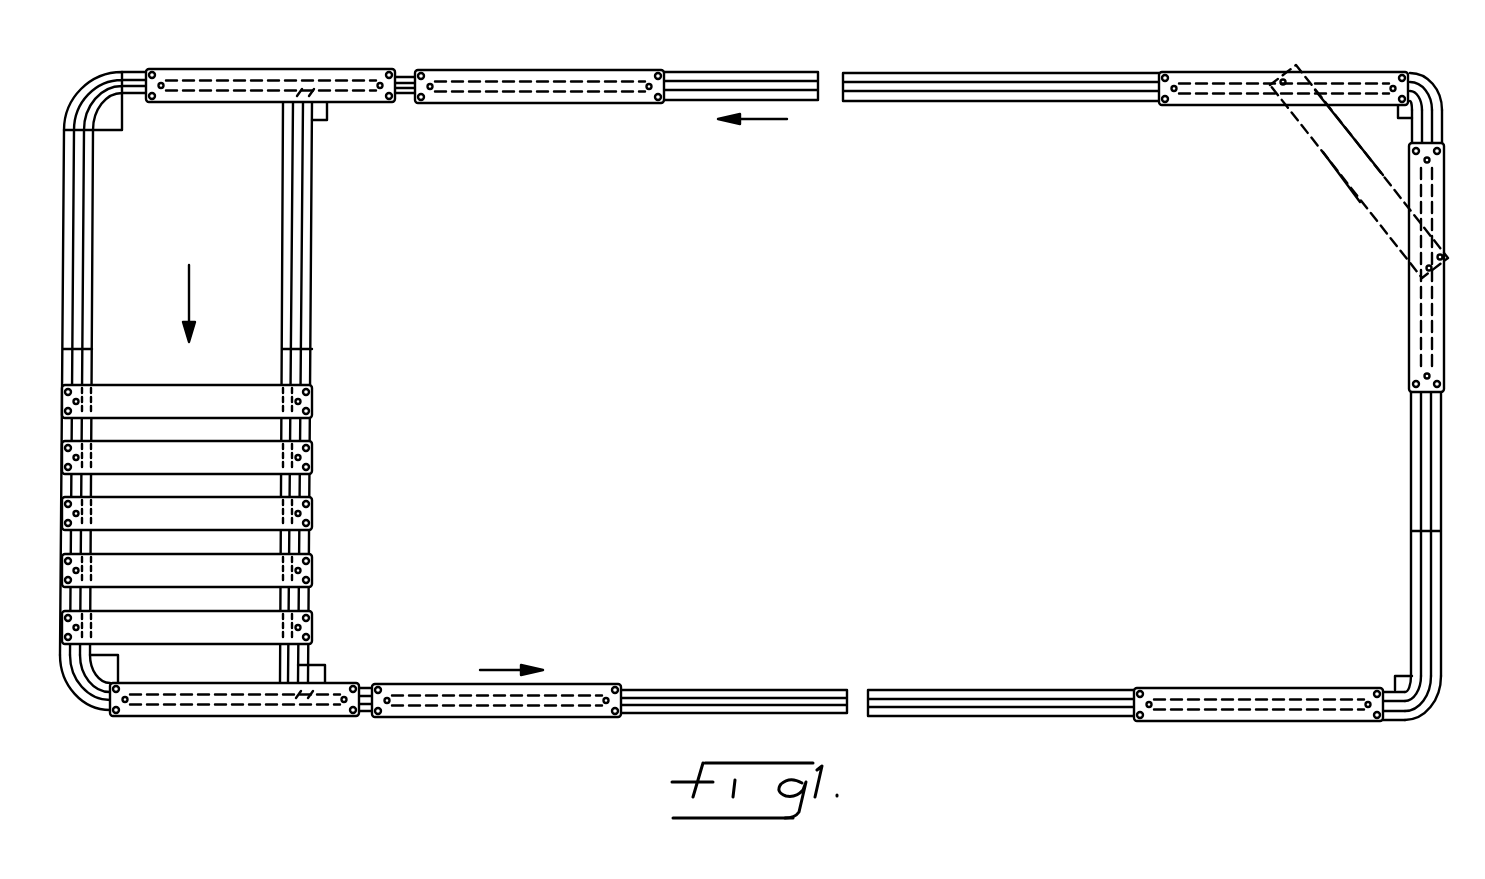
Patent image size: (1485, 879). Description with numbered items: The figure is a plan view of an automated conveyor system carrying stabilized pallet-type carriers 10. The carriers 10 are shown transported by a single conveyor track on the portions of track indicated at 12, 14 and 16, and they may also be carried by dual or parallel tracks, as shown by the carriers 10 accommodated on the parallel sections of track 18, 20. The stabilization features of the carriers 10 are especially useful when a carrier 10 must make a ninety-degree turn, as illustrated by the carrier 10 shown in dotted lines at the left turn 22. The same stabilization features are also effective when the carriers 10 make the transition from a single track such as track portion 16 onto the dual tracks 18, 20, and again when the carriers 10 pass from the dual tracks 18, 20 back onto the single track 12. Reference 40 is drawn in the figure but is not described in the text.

The pallet-type carrier 10 is at (552, 69).
The track portion 12 is at (743, 688).
The track portion 14 is at (1403, 470).
The track portion 16 is at (1032, 102).
The parallel track section 18 is at (93, 292).
The parallel track section 20 is at (282, 192).
The left turn 22 is at (1432, 82).
The pivoting transfer section 40 is at (1337, 155).